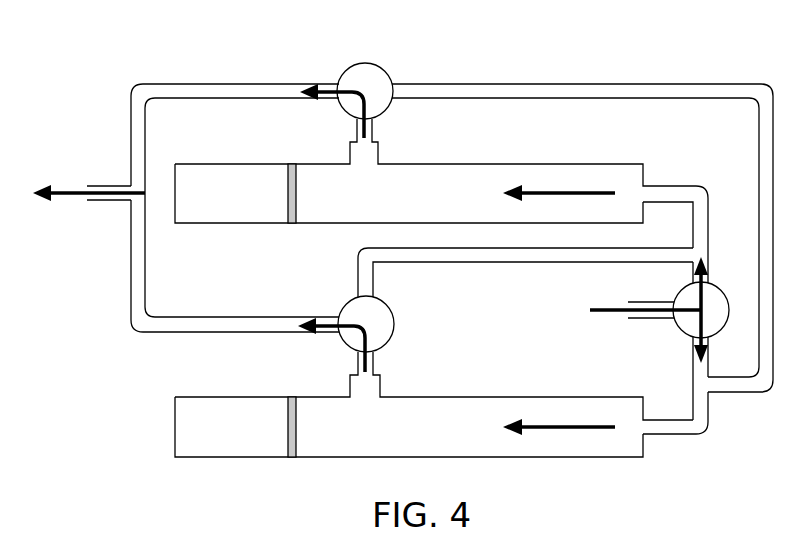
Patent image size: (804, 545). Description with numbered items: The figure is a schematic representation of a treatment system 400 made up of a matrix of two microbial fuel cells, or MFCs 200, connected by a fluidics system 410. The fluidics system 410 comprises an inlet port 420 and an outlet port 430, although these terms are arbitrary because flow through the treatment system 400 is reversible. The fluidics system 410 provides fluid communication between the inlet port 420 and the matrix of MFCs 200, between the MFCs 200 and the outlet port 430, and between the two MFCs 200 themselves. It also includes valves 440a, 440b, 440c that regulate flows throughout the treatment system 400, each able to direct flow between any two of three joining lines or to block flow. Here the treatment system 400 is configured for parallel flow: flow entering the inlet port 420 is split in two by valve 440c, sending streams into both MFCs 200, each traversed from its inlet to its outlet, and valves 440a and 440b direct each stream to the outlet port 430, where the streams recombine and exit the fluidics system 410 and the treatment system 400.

The treatment system 400 is at (166, 46).
The fluidics system 410 is at (720, 83).
The MFC 200 is at (266, 163).
The inlet port 420 is at (643, 318).
The outlet port 430 is at (105, 200).
The valve 440a is at (365, 62).
The valve 440b is at (344, 304).
The valve 440c is at (677, 296).